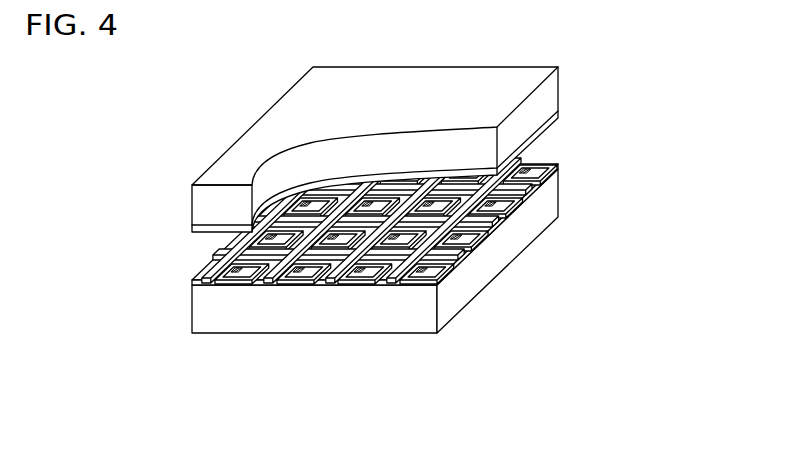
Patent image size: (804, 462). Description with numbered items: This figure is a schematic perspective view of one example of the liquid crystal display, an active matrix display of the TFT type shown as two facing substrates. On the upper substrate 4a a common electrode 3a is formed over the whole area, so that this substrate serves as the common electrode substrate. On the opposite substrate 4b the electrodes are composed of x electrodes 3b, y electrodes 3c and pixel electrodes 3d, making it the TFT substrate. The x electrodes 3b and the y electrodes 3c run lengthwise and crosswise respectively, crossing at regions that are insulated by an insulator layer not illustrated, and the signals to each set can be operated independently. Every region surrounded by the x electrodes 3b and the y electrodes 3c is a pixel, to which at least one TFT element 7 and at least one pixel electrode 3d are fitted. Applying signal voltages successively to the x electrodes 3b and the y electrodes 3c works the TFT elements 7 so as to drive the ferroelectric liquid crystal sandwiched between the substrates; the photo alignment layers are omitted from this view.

The substrate 4a is at (552, 100).
The common electrode 3a is at (555, 112).
The substrate 4b is at (550, 198).
The y electrode 3c is at (390, 281).
The x electrode 3b is at (470, 251).
The pixel electrode 3d is at (500, 204).
The TFT element 7 is at (475, 247).